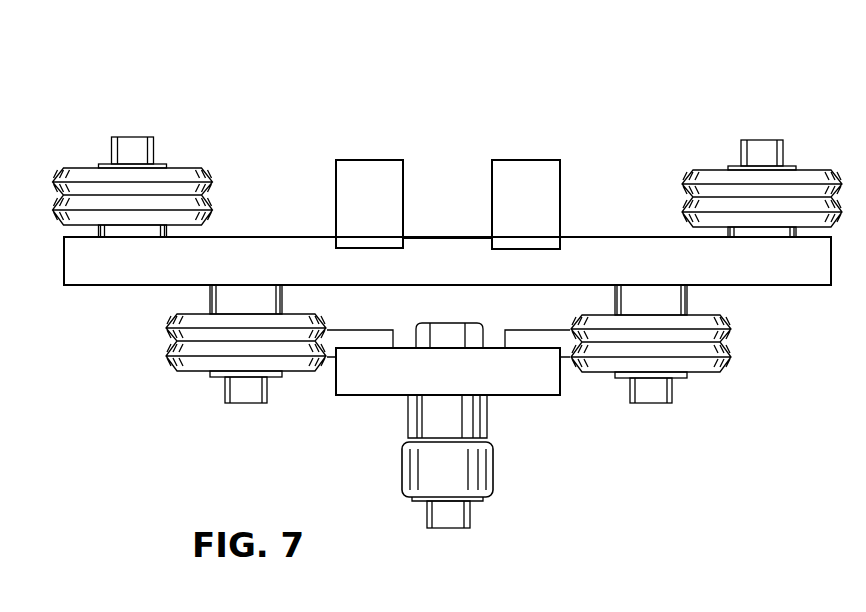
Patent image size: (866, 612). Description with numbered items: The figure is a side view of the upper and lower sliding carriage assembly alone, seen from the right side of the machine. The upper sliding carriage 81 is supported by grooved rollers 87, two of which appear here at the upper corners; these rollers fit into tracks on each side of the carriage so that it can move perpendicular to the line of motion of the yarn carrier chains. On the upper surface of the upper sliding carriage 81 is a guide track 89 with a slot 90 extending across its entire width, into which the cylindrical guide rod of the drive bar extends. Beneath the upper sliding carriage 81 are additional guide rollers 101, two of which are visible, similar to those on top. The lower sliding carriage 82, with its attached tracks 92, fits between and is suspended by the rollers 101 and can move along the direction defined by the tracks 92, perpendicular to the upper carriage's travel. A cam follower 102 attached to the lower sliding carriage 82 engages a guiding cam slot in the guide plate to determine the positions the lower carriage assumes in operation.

The upper sliding carriage 81 is at (638, 260).
The lower sliding carriage 82 is at (521, 375).
The grooved rollers 87 is at (203, 175).
The guide track 89 is at (373, 190).
The slot 90 is at (443, 187).
The tracks 92 is at (343, 342).
The guide rollers 101 is at (183, 374).
The cam follower 102 is at (458, 469).